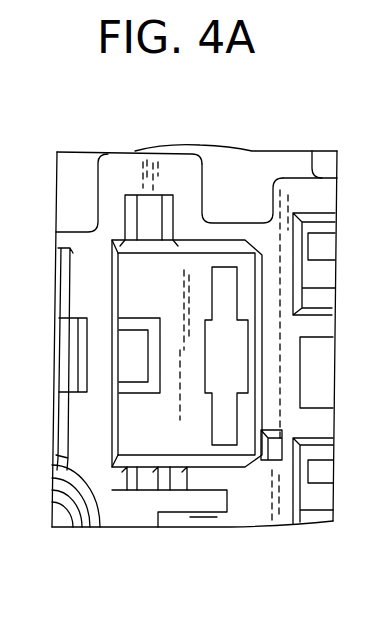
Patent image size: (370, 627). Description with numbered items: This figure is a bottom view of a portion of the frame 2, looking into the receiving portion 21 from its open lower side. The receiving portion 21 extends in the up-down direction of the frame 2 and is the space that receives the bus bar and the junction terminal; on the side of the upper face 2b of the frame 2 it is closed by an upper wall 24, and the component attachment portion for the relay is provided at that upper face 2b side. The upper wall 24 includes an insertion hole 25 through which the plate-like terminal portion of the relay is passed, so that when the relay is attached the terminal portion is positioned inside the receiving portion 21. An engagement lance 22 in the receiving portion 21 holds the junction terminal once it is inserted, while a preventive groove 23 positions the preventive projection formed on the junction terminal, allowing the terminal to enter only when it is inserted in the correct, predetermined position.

The frame 2 is at (251, 172).
The upper face 2b is at (88, 430).
The receiving portion 21 is at (189, 267).
The engagement lance 22 is at (137, 358).
The preventive groove 23 is at (267, 445).
The upper wall 24 is at (188, 438).
The insertion hole 25 is at (220, 348).